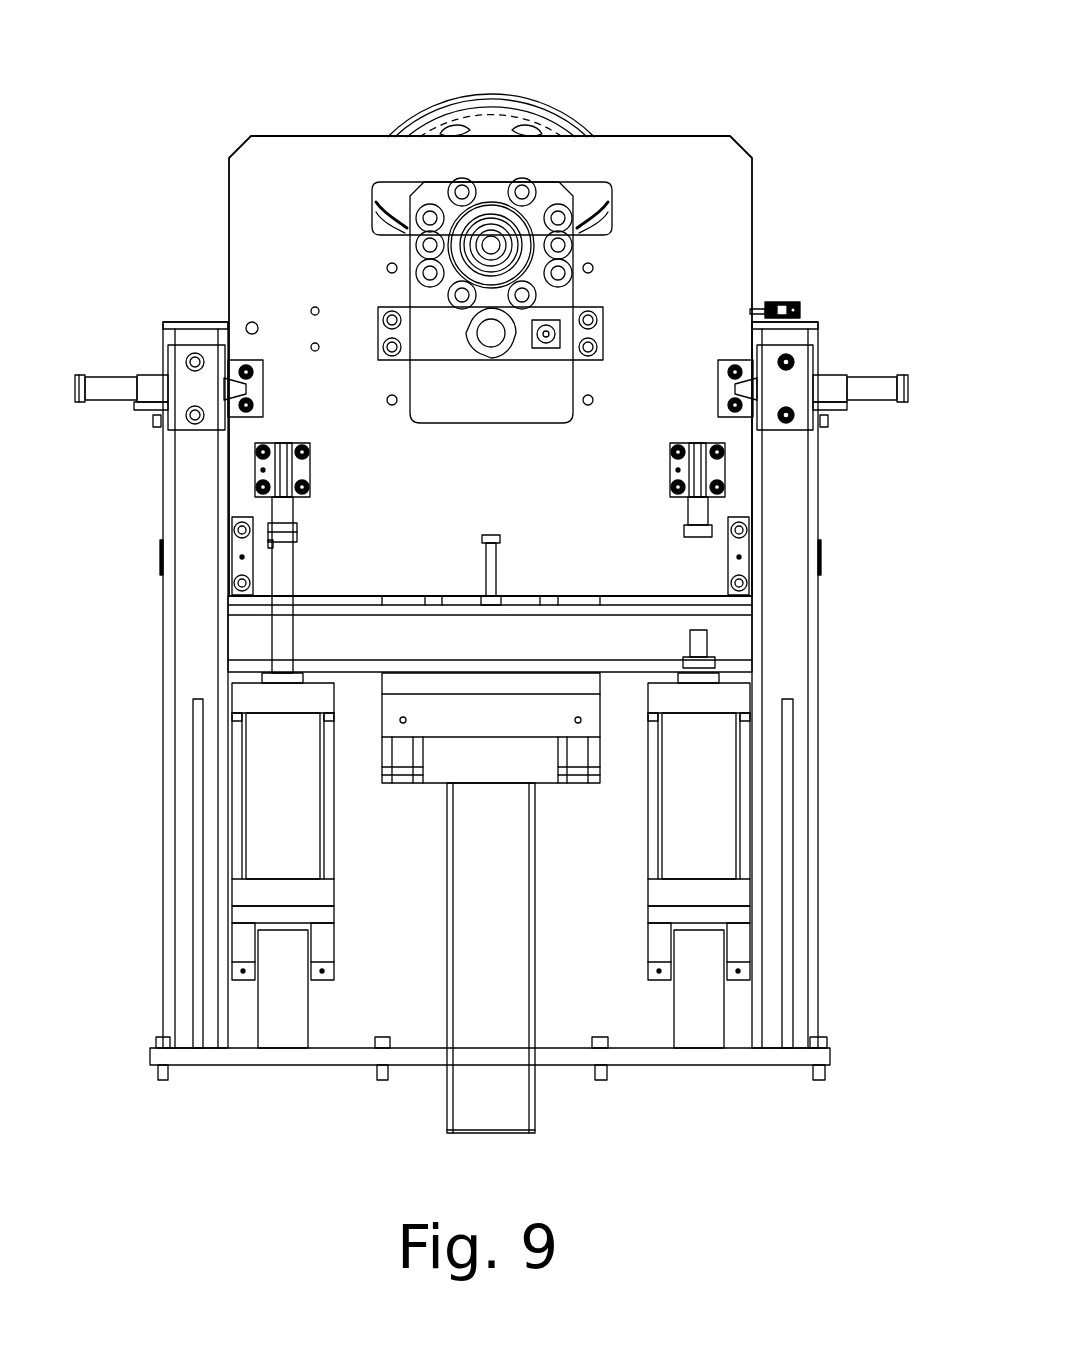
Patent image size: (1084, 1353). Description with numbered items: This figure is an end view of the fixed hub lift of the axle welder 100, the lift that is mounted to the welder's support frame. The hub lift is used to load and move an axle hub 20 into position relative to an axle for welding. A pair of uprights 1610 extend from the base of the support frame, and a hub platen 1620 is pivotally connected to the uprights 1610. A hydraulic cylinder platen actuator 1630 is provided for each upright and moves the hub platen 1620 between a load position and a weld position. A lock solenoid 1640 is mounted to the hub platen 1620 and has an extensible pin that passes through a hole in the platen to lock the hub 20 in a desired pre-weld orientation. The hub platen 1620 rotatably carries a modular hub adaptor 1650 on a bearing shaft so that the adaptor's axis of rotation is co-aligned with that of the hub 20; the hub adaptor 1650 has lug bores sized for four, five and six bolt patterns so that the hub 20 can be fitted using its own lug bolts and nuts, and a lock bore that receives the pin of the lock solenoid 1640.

The axle welder 100 is at (828, 114).
The axle hub 20 is at (503, 117).
The upright 1610 is at (193, 613).
The hub platen 1620 is at (720, 250).
The hydraulic cylinder platen actuator 1630 is at (276, 809).
The lock solenoid 1640 is at (556, 323).
The hub adaptor 1650 is at (436, 194).